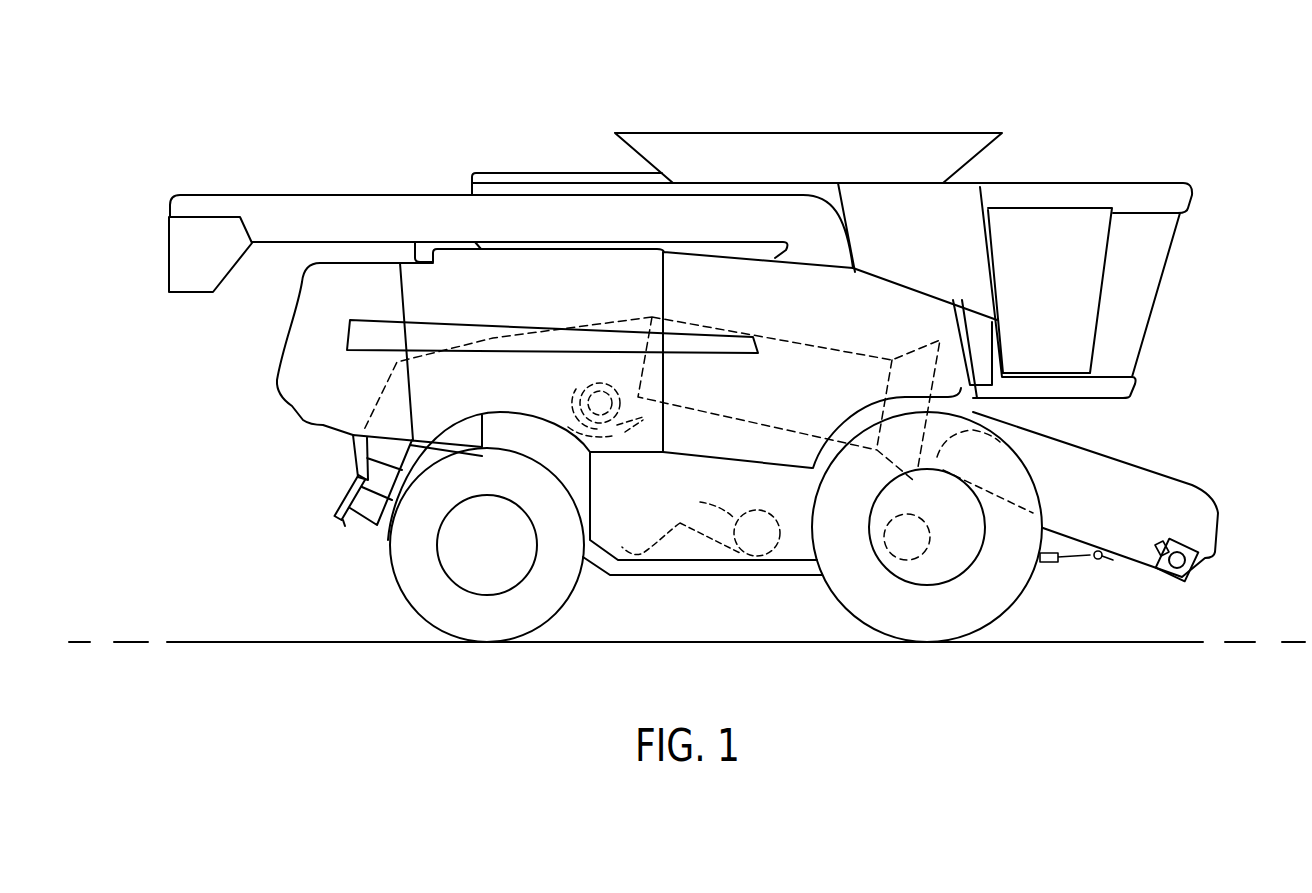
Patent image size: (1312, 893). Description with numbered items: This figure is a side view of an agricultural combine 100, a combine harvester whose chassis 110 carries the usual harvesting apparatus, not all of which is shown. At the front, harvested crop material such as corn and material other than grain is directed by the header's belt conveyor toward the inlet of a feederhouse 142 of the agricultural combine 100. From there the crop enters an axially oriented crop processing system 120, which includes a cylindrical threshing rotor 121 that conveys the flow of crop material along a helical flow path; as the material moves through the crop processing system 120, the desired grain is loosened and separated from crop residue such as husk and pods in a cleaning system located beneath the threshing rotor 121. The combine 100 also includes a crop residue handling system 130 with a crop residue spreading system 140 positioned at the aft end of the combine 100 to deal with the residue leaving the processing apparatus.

The agricultural combine 100 is at (687, 383).
The chassis 110 is at (640, 583).
The crop processing system 120 is at (803, 312).
The threshing rotor 121 is at (807, 342).
The crop residue handling system 130 is at (540, 316).
The crop residue spreading system 140 is at (335, 490).
The feederhouse 142 is at (1185, 462).